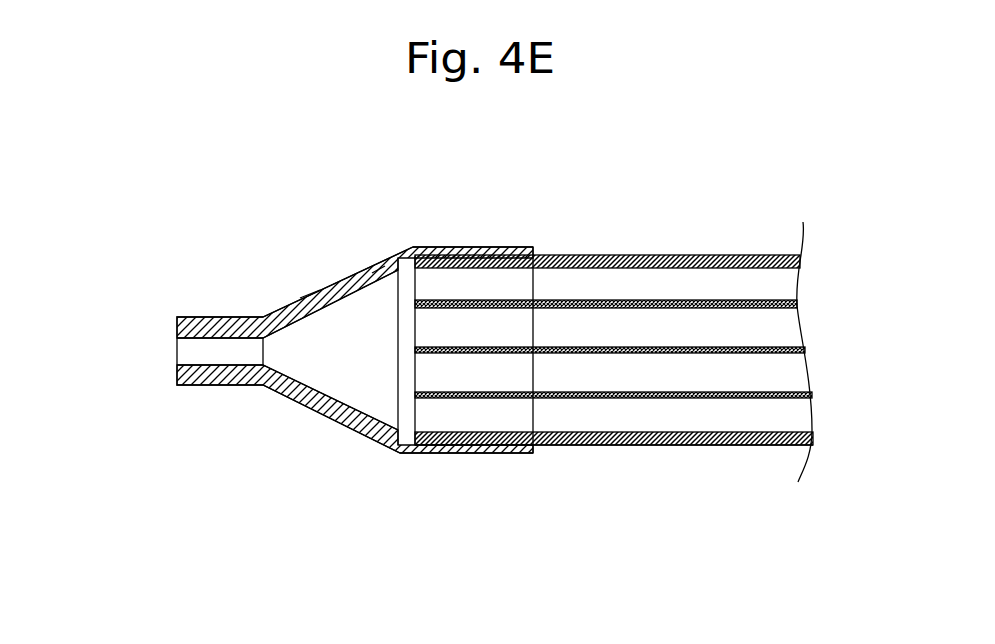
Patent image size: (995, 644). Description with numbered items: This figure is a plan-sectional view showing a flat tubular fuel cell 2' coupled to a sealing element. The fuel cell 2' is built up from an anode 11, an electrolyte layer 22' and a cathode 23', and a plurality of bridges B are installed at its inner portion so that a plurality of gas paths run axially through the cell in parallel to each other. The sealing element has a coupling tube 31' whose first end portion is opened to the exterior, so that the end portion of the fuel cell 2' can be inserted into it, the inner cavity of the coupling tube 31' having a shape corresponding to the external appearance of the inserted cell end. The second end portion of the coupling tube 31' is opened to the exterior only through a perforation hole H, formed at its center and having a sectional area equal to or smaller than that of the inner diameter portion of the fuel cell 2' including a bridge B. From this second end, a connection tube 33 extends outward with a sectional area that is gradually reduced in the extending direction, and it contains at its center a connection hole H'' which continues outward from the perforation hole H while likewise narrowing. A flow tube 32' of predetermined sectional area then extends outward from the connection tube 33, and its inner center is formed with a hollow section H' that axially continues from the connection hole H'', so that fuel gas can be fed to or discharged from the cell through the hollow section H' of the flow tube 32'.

The flat tubular fuel cell 2' is at (635, 311).
The bridge B is at (588, 302).
The perforation hole H is at (368, 270).
The hollow section H' is at (145, 352).
The connection hole H'' is at (289, 275).
The anode 11 is at (541, 455).
The electrolyte layer 22' is at (614, 490).
The cathode 23' is at (613, 442).
The coupling tube 31' is at (355, 399).
The flow tube 32' is at (220, 397).
The connection tube 33 is at (343, 420).